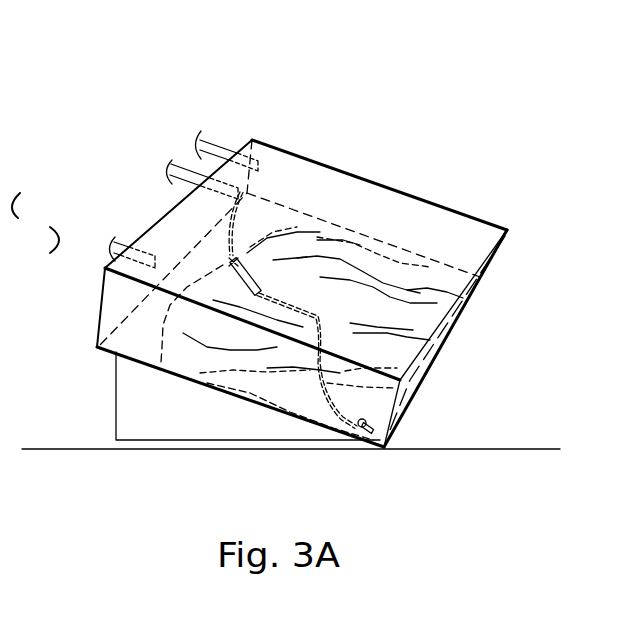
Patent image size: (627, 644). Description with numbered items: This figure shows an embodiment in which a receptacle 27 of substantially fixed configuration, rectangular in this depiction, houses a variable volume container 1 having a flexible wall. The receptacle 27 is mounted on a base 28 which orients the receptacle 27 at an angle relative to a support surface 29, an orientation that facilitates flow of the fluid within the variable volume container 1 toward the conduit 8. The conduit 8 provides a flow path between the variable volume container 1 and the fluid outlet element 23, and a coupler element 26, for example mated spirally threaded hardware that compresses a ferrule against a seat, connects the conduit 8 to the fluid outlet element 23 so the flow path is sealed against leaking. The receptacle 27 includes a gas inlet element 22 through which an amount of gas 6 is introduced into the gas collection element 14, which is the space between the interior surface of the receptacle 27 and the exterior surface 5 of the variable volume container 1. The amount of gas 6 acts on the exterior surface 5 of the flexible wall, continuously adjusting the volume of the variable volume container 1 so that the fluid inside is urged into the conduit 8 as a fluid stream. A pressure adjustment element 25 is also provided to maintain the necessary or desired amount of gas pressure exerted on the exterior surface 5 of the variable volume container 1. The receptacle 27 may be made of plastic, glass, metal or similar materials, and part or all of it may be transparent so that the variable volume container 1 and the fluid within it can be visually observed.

The variable volume container 1 is at (373, 275).
The exterior surface 5 is at (288, 385).
The amount of gas 6 is at (35, 223).
The conduit 8 is at (317, 318).
The gas collection element 14 is at (375, 402).
The gas inlet element 22 is at (125, 246).
The fluid outlet element 23 is at (188, 170).
The pressure adjustment element 25 is at (222, 138).
The coupler element 26 is at (233, 270).
The receptacle 27 is at (456, 211).
The base 28 is at (200, 412).
The support surface 29 is at (67, 448).